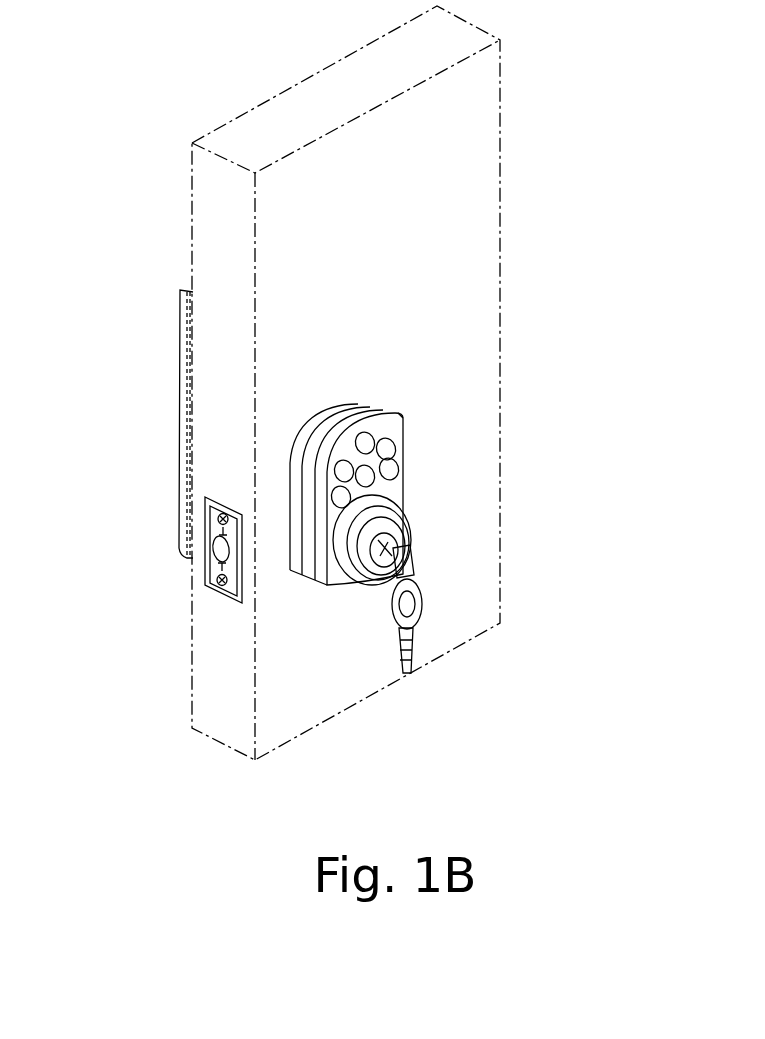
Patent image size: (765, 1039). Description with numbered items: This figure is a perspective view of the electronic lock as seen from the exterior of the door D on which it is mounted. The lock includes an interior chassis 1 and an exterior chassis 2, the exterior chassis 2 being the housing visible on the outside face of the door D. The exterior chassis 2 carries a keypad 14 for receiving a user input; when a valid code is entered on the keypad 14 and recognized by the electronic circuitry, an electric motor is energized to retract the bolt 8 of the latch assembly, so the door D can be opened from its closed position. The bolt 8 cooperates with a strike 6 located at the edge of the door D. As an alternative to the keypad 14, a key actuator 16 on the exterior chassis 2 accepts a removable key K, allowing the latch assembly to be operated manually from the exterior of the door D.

The interior chassis 1 is at (135, 373).
The exterior chassis 2 is at (433, 380).
The strike 6 is at (222, 595).
The bolt 8 is at (220, 552).
The keypad 14 is at (405, 453).
The key actuator 16 is at (425, 533).
The key K is at (416, 557).
The door D is at (308, 110).